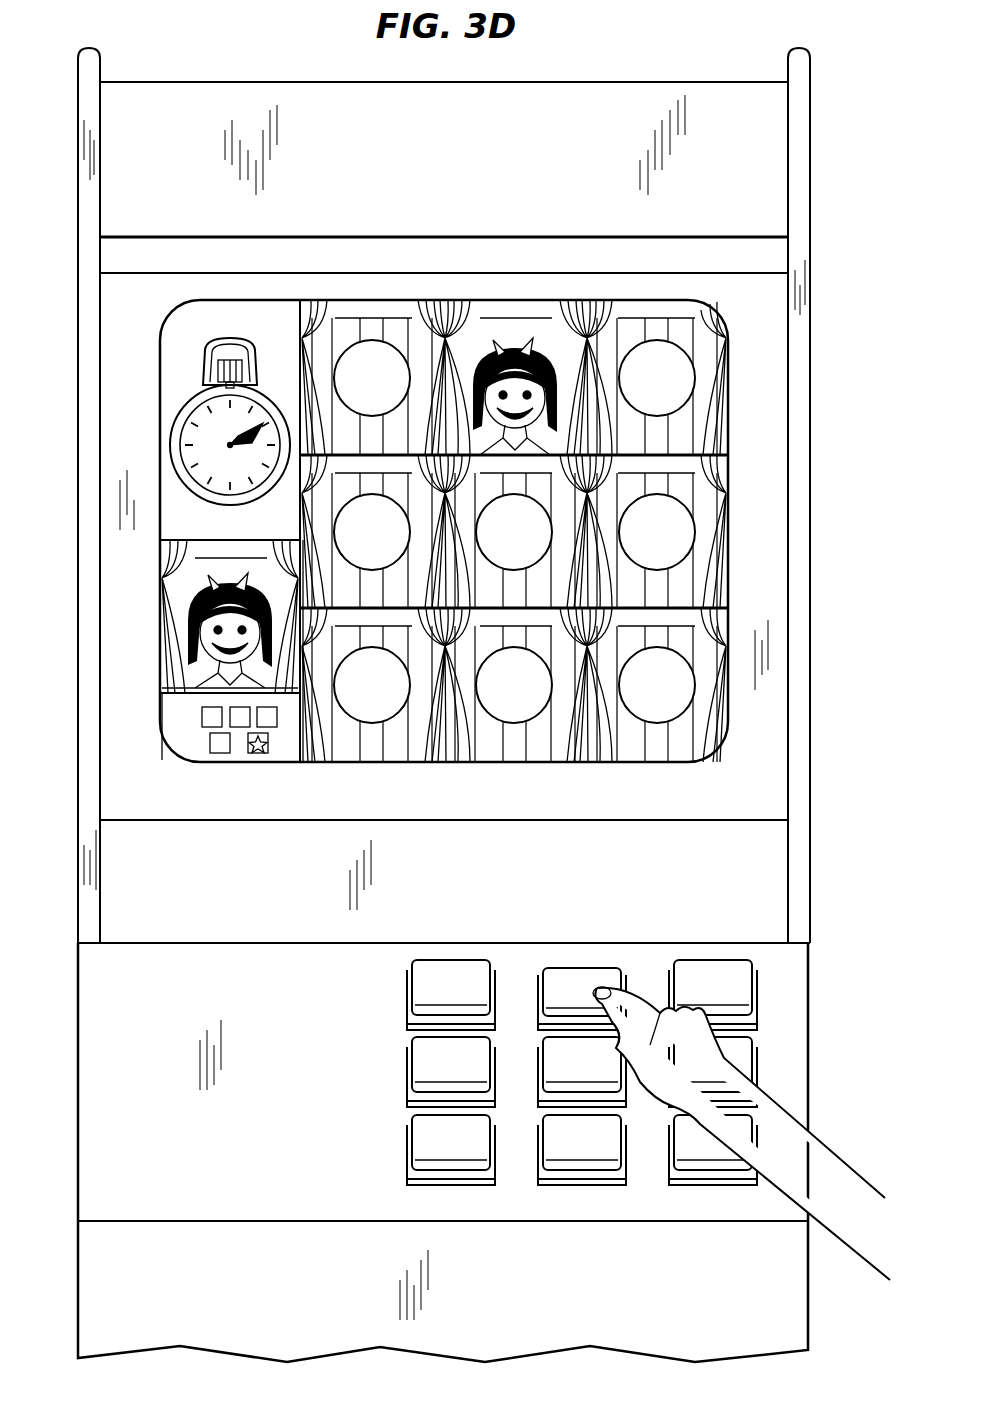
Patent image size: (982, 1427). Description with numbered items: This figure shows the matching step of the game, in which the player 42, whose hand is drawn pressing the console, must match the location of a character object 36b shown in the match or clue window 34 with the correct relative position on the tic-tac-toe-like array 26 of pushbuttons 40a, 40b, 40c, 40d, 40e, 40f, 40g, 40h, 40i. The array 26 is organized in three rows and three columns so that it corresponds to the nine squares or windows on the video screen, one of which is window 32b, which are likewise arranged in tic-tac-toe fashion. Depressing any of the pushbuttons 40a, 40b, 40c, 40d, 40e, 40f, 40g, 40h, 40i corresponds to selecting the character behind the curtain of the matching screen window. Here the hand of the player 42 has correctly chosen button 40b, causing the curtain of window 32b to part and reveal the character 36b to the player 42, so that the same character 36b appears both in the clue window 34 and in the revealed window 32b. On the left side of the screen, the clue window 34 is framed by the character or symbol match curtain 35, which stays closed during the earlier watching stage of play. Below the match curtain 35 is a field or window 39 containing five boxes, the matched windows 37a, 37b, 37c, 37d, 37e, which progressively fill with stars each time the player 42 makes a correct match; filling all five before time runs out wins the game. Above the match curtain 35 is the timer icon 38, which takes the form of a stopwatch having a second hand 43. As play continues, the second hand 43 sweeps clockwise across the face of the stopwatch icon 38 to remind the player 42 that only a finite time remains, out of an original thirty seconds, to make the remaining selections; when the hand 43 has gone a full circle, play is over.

The tic-tac-toe-like array 26 is at (838, 960).
The window 32b is at (540, 332).
The match or clue window 34 is at (190, 600).
The match curtain 35 is at (180, 674).
The character object 36b is at (512, 350).
The matched window 37a is at (255, 757).
The matched window 37b is at (215, 757).
The matched window 37c is at (208, 738).
The matched window 37d is at (203, 708).
The matched window 37e is at (280, 730).
The timer icon 38 is at (180, 410).
The field or window 39 is at (188, 743).
The pushbutton 40a is at (408, 986).
The pushbutton 40b is at (590, 962).
The pushbutton 40c is at (720, 962).
The pushbutton 40d is at (408, 1069).
The pushbutton 40e is at (537, 1058).
The pushbutton 40f is at (757, 1076).
The pushbutton 40g is at (408, 1154).
The pushbutton 40h is at (572, 1178).
The pushbutton 40i is at (714, 1190).
The player 42 is at (668, 1072).
The second hand 43 is at (232, 445).